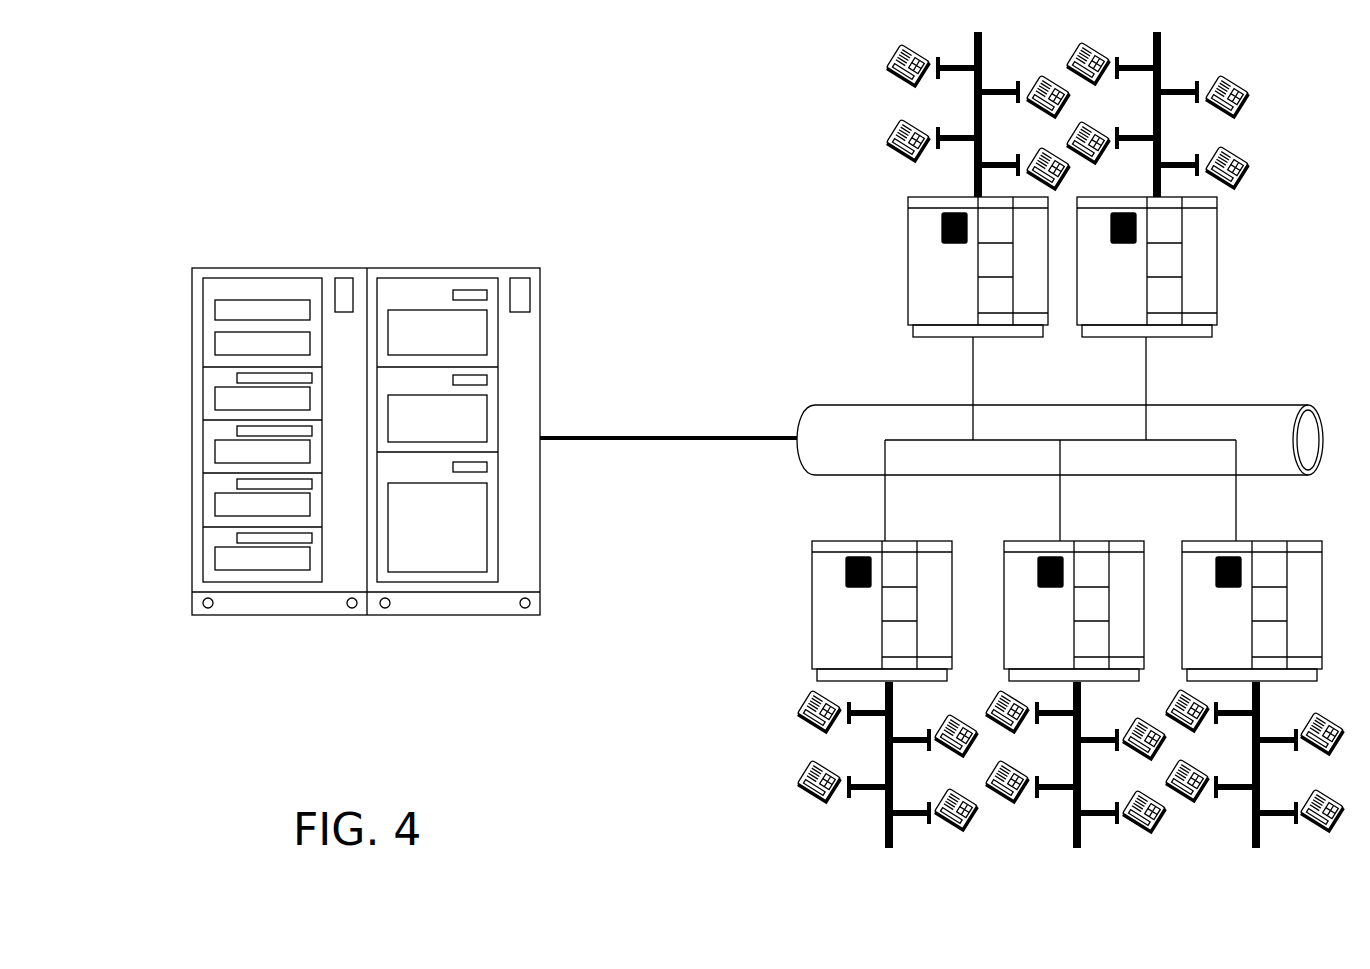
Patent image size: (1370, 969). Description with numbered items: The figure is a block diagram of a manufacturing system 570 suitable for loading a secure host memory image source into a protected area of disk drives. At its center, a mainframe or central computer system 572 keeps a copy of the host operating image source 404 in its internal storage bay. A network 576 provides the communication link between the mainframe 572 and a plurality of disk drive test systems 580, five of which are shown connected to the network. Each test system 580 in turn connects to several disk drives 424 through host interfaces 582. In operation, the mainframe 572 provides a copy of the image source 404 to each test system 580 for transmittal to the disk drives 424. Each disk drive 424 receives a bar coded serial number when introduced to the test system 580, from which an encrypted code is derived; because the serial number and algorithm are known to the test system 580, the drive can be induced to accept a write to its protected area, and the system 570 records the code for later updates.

The system 570 is at (482, 128).
The mainframe or central computer system 572 is at (383, 247).
The host operating image source 404 is at (290, 567).
The network 576 is at (832, 405).
The disk drive test system 580 is at (908, 270).
The host interface 582 is at (976, 120).
The disk drive 424 is at (878, 75).